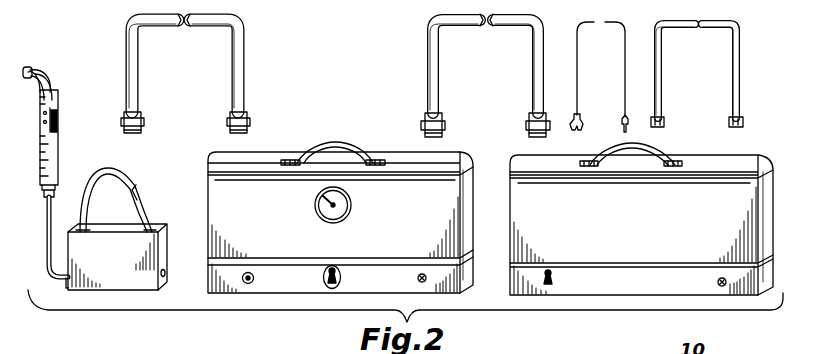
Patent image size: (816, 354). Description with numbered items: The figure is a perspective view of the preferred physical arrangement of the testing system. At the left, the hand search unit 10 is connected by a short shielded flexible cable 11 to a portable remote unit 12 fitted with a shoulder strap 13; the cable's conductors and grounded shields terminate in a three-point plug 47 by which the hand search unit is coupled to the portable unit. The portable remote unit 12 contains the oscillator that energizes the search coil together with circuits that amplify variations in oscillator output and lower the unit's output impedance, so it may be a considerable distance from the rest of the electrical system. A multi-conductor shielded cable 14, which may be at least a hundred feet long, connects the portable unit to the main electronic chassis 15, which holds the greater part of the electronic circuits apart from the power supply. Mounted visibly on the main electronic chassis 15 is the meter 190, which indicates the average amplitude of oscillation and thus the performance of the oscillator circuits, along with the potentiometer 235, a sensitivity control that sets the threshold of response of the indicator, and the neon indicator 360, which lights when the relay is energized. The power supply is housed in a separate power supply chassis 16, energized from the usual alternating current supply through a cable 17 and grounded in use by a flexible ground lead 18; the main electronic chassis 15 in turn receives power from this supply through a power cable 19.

The hand search unit 10 is at (58, 150).
The shielded flexible cable 11 is at (44, 232).
The portable remote unit 12 is at (118, 229).
The shoulder strap 13 is at (130, 172).
The multi-conductor shielded cable 14 is at (138, 90).
The main electronic chassis 15 is at (282, 153).
The power supply chassis 16 is at (736, 165).
The cable 17 is at (732, 63).
The flexible ground lead 18 is at (625, 72).
The power cable 19 is at (532, 62).
The three-point plug 47 is at (67, 283).
The meter 190 is at (322, 209).
The potentiometer 235 is at (341, 277).
The neon indicator 360 is at (254, 278).